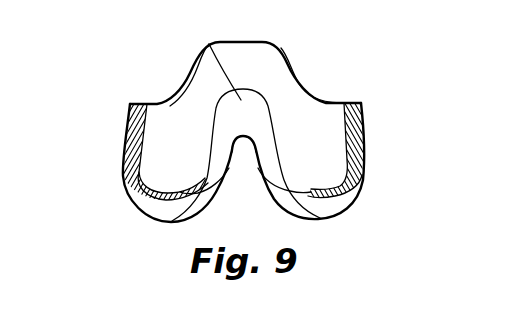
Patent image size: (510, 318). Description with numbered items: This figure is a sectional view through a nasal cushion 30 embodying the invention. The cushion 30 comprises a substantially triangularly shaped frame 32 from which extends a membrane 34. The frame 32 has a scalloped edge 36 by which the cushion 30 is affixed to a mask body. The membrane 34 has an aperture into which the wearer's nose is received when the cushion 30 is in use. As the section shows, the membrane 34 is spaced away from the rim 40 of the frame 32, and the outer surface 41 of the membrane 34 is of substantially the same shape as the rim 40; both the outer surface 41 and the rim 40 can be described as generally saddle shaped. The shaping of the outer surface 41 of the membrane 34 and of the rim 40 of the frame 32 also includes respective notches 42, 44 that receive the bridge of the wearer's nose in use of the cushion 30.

The nasal cushion 30 is at (119, 71).
The frame 32 is at (263, 62).
The membrane 34 is at (146, 204).
The scalloped edge 36 is at (313, 88).
The rim 40 is at (367, 173).
The outer surface 41 is at (347, 203).
The notch 42 is at (241, 138).
The notch 44 is at (209, 44).